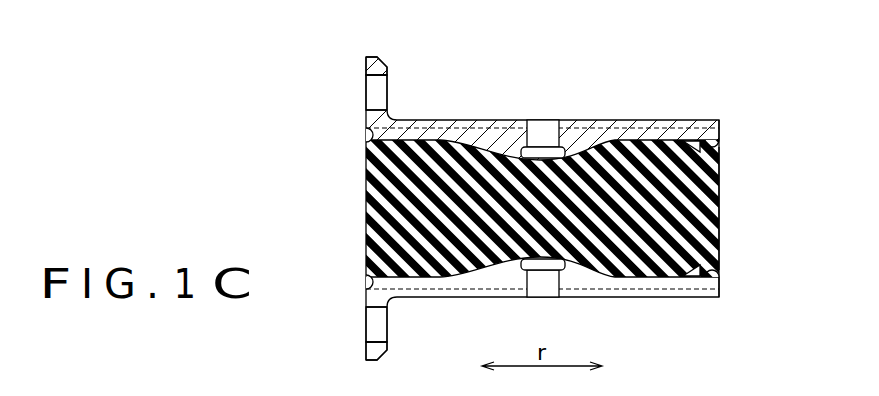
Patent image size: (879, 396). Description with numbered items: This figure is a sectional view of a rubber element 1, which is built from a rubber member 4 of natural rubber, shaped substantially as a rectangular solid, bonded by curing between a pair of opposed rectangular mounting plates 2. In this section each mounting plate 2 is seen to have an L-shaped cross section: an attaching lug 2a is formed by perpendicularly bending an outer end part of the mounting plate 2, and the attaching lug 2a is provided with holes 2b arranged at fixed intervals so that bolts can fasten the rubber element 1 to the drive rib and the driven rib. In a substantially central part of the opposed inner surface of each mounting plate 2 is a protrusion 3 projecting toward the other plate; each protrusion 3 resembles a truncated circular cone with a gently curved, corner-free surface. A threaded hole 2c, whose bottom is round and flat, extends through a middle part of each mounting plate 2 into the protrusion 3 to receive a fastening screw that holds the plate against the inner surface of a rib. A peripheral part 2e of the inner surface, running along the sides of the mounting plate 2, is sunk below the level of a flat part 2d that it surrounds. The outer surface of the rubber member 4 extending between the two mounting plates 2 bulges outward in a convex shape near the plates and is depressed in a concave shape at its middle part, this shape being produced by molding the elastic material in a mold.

The rubber element 1 is at (730, 94).
The mounting plate 2 is at (617, 120).
The attaching lug 2a is at (372, 66).
The holes 2b is at (370, 100).
The threaded hole 2c is at (543, 127).
The flat part 2d is at (686, 145).
The peripheral part 2e is at (367, 133).
The protrusion 3 is at (498, 250).
The rubber member 4 is at (708, 200).